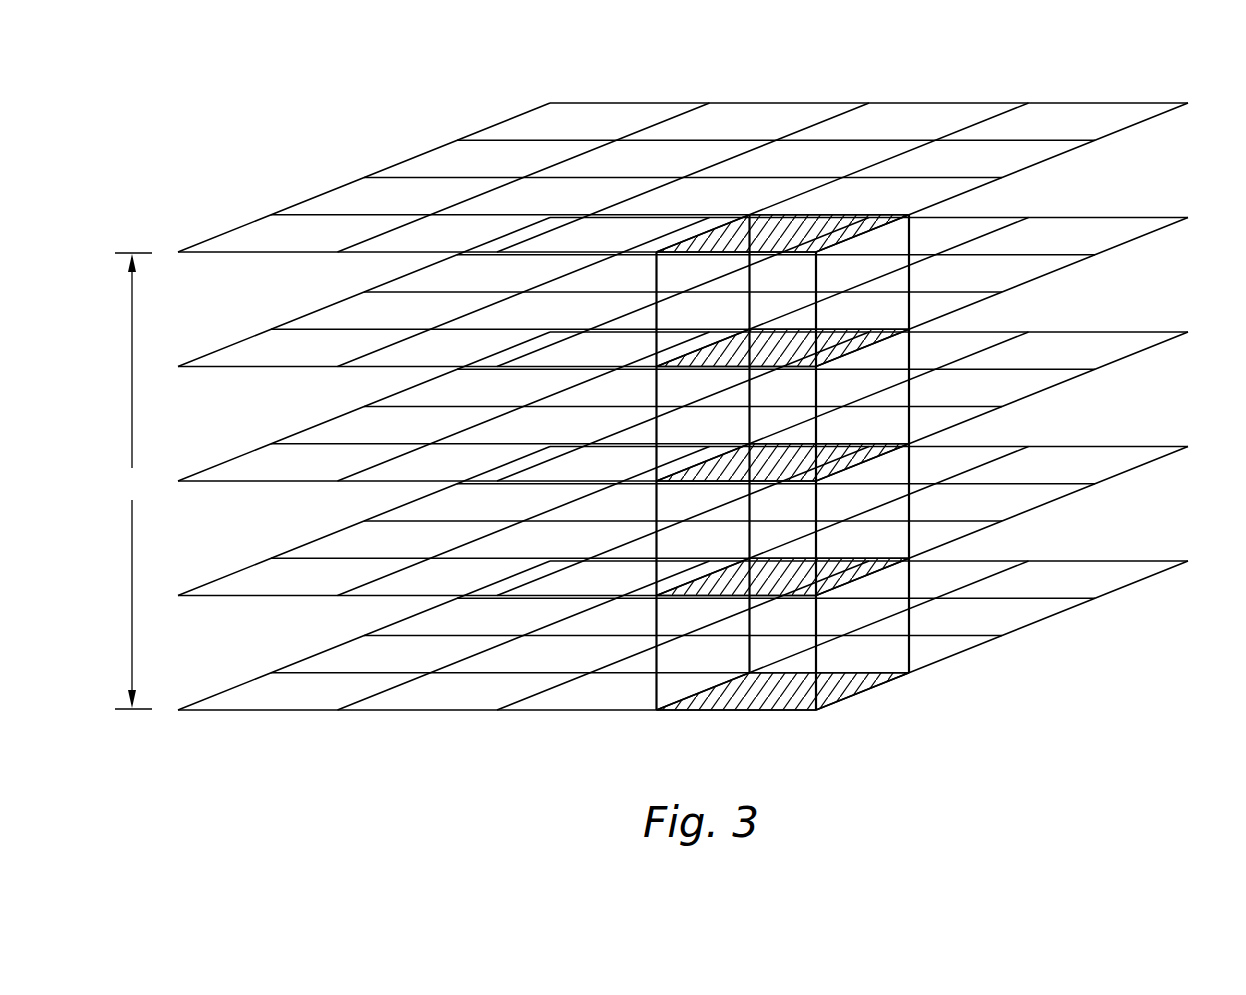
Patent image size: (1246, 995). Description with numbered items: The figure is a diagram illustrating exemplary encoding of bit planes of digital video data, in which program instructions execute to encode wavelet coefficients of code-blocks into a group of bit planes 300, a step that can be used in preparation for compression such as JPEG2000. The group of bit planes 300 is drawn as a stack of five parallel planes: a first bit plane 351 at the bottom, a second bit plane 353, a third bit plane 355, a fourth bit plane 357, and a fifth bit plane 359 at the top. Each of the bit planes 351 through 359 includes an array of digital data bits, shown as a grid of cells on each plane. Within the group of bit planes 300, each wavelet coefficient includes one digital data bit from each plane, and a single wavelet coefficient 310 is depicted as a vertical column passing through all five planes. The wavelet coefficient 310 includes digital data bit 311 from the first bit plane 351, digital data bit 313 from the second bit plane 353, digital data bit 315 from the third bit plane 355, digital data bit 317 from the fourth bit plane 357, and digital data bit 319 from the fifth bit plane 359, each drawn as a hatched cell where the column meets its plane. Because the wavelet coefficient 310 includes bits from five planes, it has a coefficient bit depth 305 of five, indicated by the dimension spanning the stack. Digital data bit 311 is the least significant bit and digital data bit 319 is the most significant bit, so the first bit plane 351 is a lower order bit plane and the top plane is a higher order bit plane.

The group of bit planes 300 is at (233, 91).
The coefficient bit depth 305 is at (133, 481).
The wavelet coefficient 310 is at (787, 737).
The digital data bit 311 is at (749, 701).
The digital data bit 313 is at (749, 586).
The digital data bit 315 is at (749, 472).
The digital data bit 317 is at (749, 358).
The digital data bit 319 is at (749, 243).
The first bit plane 351 is at (1188, 561).
The second bit plane 353 is at (1188, 446).
The third bit plane 355 is at (1188, 332).
The fourth bit plane 357 is at (1188, 218).
The fifth bit plane 359 is at (1188, 103).